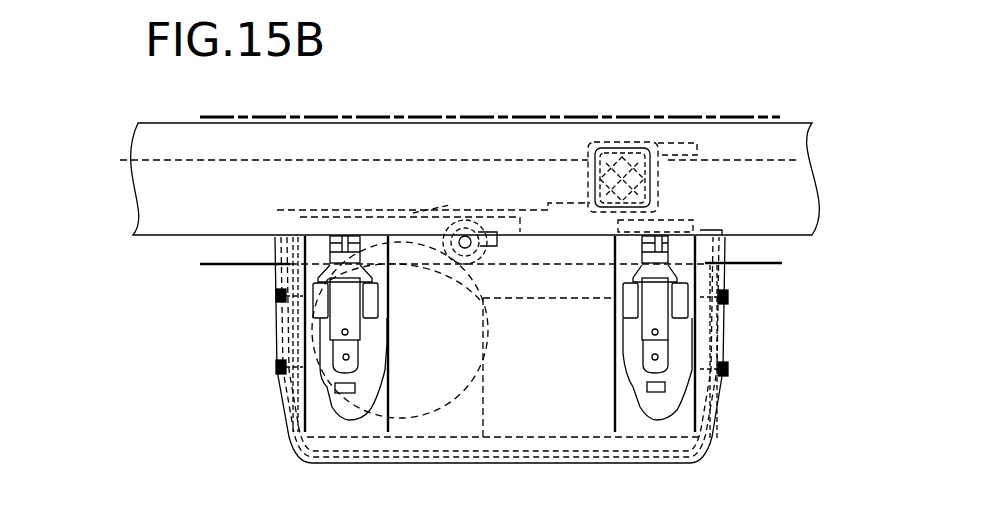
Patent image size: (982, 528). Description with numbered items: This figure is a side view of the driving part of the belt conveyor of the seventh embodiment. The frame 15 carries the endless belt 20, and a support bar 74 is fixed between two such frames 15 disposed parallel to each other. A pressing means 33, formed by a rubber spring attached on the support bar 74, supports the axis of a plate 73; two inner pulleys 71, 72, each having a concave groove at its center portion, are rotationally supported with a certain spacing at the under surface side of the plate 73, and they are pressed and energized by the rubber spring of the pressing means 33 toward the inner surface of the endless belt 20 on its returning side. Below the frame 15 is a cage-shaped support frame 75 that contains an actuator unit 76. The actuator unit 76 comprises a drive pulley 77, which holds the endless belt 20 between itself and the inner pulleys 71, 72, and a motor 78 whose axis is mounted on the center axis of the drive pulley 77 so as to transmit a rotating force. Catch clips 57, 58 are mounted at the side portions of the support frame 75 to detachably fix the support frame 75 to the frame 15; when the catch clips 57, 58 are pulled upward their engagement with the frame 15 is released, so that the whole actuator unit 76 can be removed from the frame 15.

The frame 15 is at (755, 140).
The endless belt 20 is at (691, 118).
The pressing means 33 is at (630, 143).
The catch clip 57 is at (328, 415).
The catch clip 58 is at (680, 443).
The inner pulley 71 is at (347, 232).
The inner pulley 72 is at (484, 218).
The plate 73 is at (413, 213).
The support bar 74 is at (650, 185).
The support frame 75 is at (722, 412).
The actuator unit 76 is at (738, 368).
The drive pulley 77 is at (443, 398).
The motor 78 is at (583, 352).